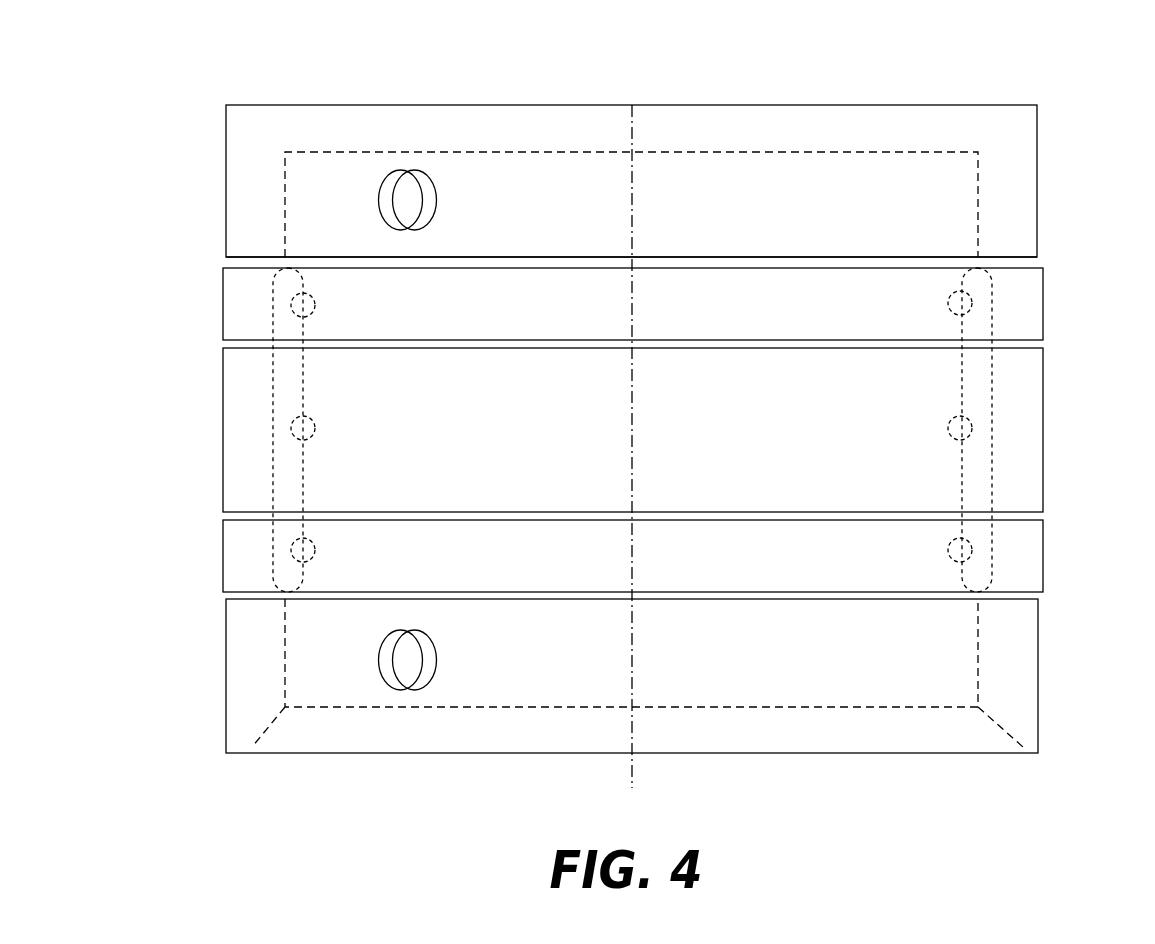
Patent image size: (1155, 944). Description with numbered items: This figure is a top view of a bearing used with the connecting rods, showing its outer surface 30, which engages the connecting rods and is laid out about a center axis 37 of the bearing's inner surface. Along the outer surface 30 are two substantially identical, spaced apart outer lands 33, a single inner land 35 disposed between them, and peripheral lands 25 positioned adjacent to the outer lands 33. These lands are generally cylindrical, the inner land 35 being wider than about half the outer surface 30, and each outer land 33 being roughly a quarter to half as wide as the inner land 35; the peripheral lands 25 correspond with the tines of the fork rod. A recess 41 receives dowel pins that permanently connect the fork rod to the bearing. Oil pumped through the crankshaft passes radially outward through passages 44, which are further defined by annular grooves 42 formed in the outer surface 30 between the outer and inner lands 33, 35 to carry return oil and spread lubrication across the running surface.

The peripheral land 25 is at (860, 203).
The outer surface 30 is at (565, 168).
The outer land 33 is at (920, 320).
The inner land 35 is at (918, 405).
The center axis 37 is at (634, 780).
The recess 41 is at (410, 171).
The annular groove 42 is at (243, 268).
The passage 44 is at (318, 305).